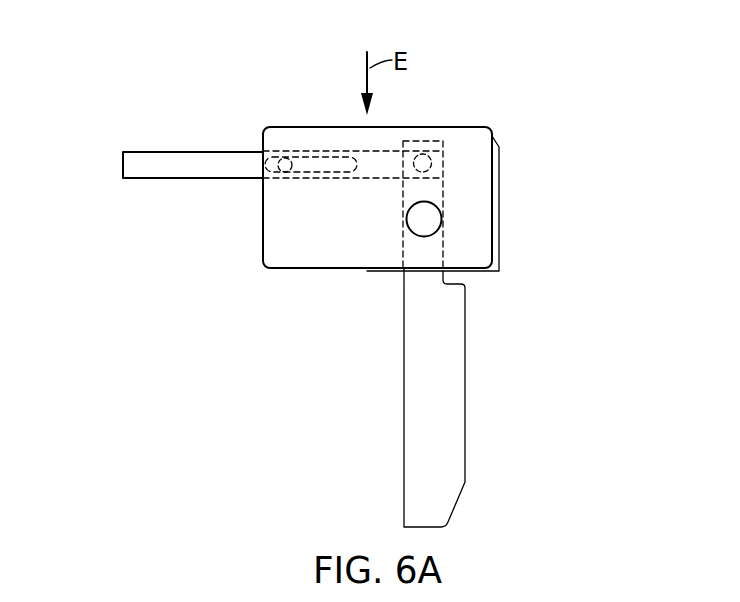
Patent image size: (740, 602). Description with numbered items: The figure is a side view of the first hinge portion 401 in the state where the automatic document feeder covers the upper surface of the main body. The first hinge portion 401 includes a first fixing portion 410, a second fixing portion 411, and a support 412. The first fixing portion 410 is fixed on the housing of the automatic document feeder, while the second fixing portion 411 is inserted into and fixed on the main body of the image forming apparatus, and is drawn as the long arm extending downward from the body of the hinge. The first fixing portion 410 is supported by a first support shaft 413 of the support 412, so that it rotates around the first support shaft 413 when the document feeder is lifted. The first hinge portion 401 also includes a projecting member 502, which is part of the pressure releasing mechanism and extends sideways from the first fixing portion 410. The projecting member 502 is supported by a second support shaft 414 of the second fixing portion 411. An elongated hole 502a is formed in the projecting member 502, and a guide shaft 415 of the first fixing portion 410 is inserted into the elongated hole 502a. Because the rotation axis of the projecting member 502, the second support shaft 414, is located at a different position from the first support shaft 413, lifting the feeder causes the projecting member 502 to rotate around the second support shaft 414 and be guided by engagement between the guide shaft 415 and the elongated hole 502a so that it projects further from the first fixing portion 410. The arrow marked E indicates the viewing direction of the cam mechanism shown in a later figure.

The first hinge portion 401 is at (470, 112).
The first fixing portion 410 is at (470, 202).
The second fixing portion 411 is at (453, 382).
The support 412 is at (495, 175).
The first support shaft 413 is at (430, 224).
The second support shaft 414 is at (432, 165).
The guide shaft 415 is at (282, 178).
The projecting member 502 is at (137, 160).
The elongated hole 502a is at (333, 165).